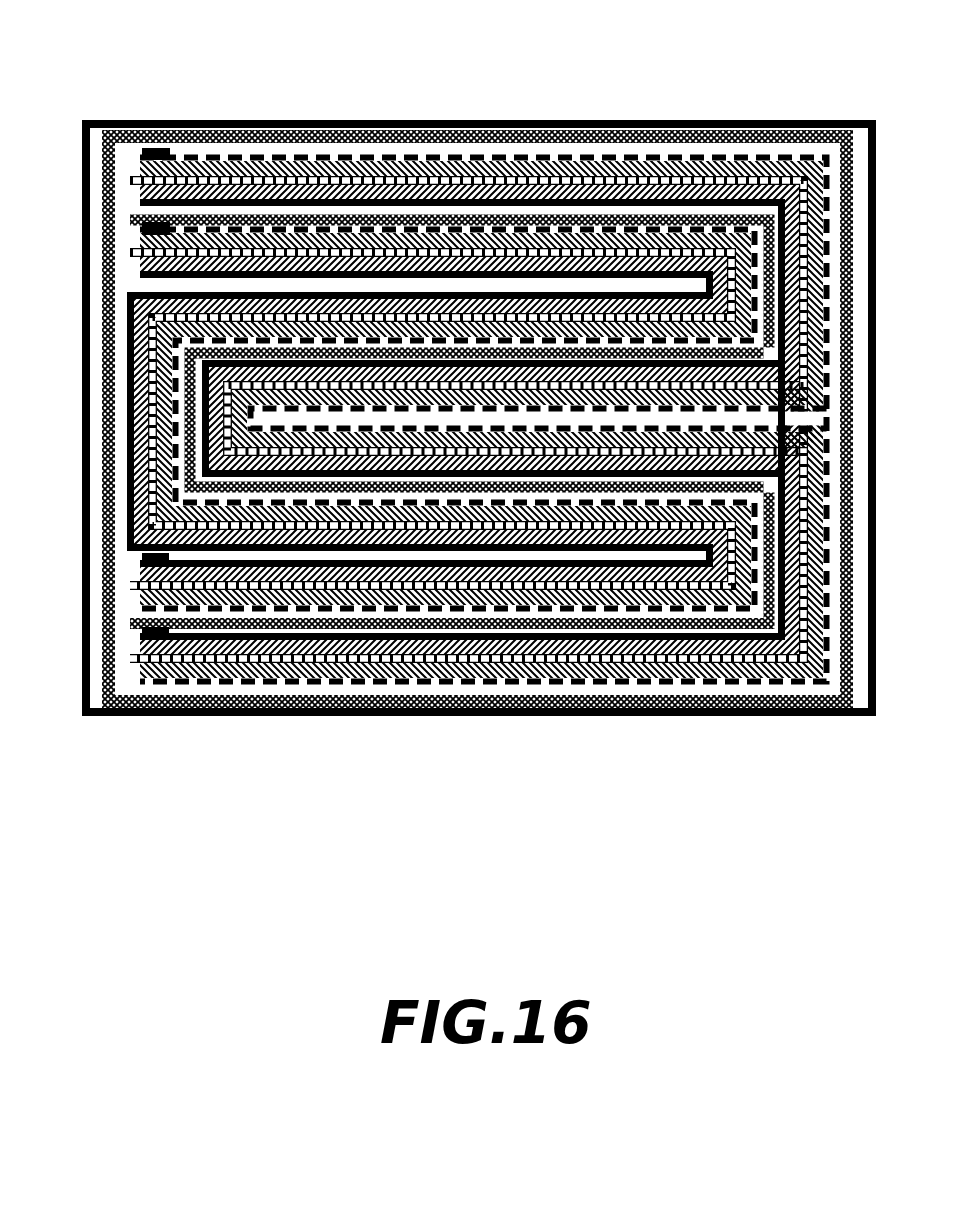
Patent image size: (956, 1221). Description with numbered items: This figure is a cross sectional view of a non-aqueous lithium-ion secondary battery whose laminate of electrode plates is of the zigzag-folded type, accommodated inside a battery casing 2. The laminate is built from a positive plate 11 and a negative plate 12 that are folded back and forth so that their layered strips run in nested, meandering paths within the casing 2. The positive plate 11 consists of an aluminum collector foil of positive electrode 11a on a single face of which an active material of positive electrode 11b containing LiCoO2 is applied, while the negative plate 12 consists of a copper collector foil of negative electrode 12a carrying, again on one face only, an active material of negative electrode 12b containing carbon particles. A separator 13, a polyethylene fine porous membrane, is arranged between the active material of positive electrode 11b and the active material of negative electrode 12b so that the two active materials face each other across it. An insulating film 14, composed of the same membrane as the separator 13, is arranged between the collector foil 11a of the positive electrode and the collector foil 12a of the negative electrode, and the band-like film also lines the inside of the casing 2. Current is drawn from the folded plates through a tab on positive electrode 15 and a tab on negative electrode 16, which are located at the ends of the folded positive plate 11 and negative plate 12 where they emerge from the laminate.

The battery casing 2 is at (688, 124).
The positive plate 11 is at (483, 533).
The collector foil of positive electrode 11a is at (355, 612).
The active material of positive electrode 11b is at (467, 610).
The negative plate 12 is at (473, 546).
The collector foil of negative electrode 12a is at (697, 573).
The active material of negative electrode 12b is at (650, 577).
The separator 13 is at (371, 236).
The insulating film 14 is at (490, 222).
The tab on positive electrode 15 is at (166, 225).
The tab on negative electrode 16 is at (162, 567).